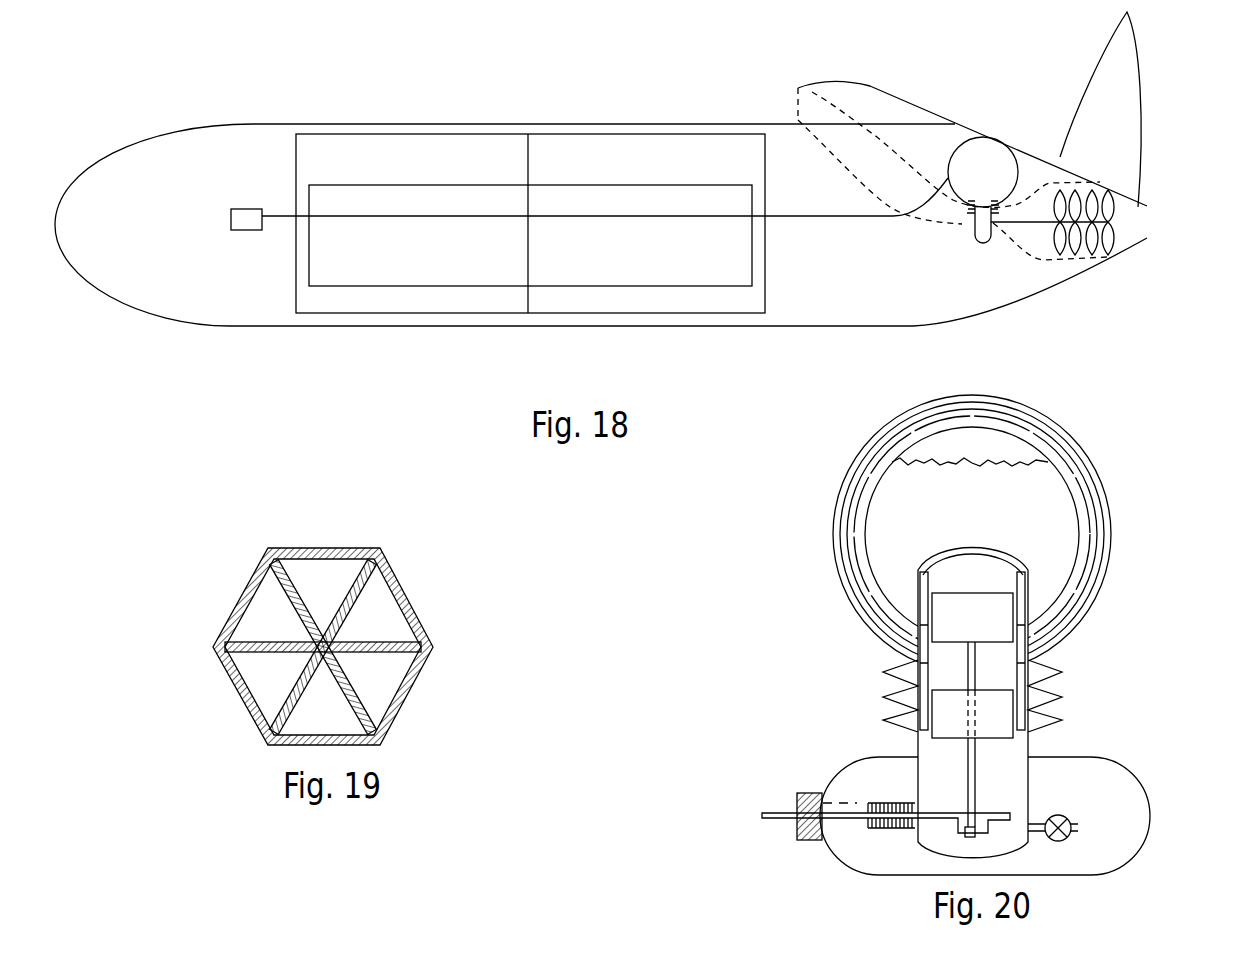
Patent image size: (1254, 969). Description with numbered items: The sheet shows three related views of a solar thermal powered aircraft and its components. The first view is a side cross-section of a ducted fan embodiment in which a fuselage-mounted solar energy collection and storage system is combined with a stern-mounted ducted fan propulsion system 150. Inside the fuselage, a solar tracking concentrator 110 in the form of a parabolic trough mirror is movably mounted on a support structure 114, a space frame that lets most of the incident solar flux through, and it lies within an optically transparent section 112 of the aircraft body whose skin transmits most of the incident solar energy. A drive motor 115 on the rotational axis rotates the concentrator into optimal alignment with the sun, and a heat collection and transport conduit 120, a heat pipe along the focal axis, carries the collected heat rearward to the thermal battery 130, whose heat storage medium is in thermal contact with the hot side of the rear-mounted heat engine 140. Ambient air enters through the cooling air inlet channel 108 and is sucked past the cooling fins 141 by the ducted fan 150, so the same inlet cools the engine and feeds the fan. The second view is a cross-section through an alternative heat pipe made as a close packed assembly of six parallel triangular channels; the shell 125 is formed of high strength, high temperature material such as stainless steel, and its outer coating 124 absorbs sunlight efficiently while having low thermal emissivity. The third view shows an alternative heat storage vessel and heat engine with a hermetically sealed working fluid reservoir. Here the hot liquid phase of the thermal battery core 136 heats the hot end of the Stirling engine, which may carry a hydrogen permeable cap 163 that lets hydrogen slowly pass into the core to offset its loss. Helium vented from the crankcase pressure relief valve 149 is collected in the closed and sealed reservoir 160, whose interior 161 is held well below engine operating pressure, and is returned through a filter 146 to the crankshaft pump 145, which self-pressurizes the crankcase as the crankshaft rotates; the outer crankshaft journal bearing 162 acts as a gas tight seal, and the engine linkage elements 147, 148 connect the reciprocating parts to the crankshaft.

In FIG. 18, the cooling air inlet channel 108 is at (877, 137).
In FIG. 18, the solar tracking concentrator 110 is at (410, 286).
In FIG. 18, the optically transparent section 112 is at (822, 326).
In FIG. 18, the support structure 114 is at (528, 245).
In FIG. 18, the drive motor 115 is at (247, 231).
In FIG. 18, the heat collection/transport conduit 120 is at (428, 205).
In FIG. 19, the outer coating 124 is at (423, 630).
In FIG. 19, the shell 125 is at (403, 598).
In FIG. 18, the thermal battery 130 is at (1002, 160).
In FIG. 20, the thermal battery core 136 is at (959, 518).
In FIG. 18, the heat engine 140 is at (995, 224).
In FIG. 18, the cooling fins 141 is at (968, 213).
In FIG. 20, the cooling fins 141 is at (1055, 670).
In FIG. 20, the crankshaft pump 145 is at (895, 802).
In FIG. 20, the filter 146 is at (843, 802).
In FIG. 20, the piston rod pivot 147 is at (998, 800).
In FIG. 20, the actuating shaft 148 is at (790, 812).
In FIG. 20, the crankcase pressure relief valve 149 is at (1068, 838).
In FIG. 18, the ducted fan propulsion system 150 is at (1113, 243).
In FIG. 20, the sealed reservoir 160 is at (1140, 778).
In FIG. 20, the tank interior 161 is at (1081, 794).
In FIG. 20, the outer crankshaft journal bearing 162 is at (800, 840).
In FIG. 20, the hydrogen permeable cap 163 is at (940, 558).